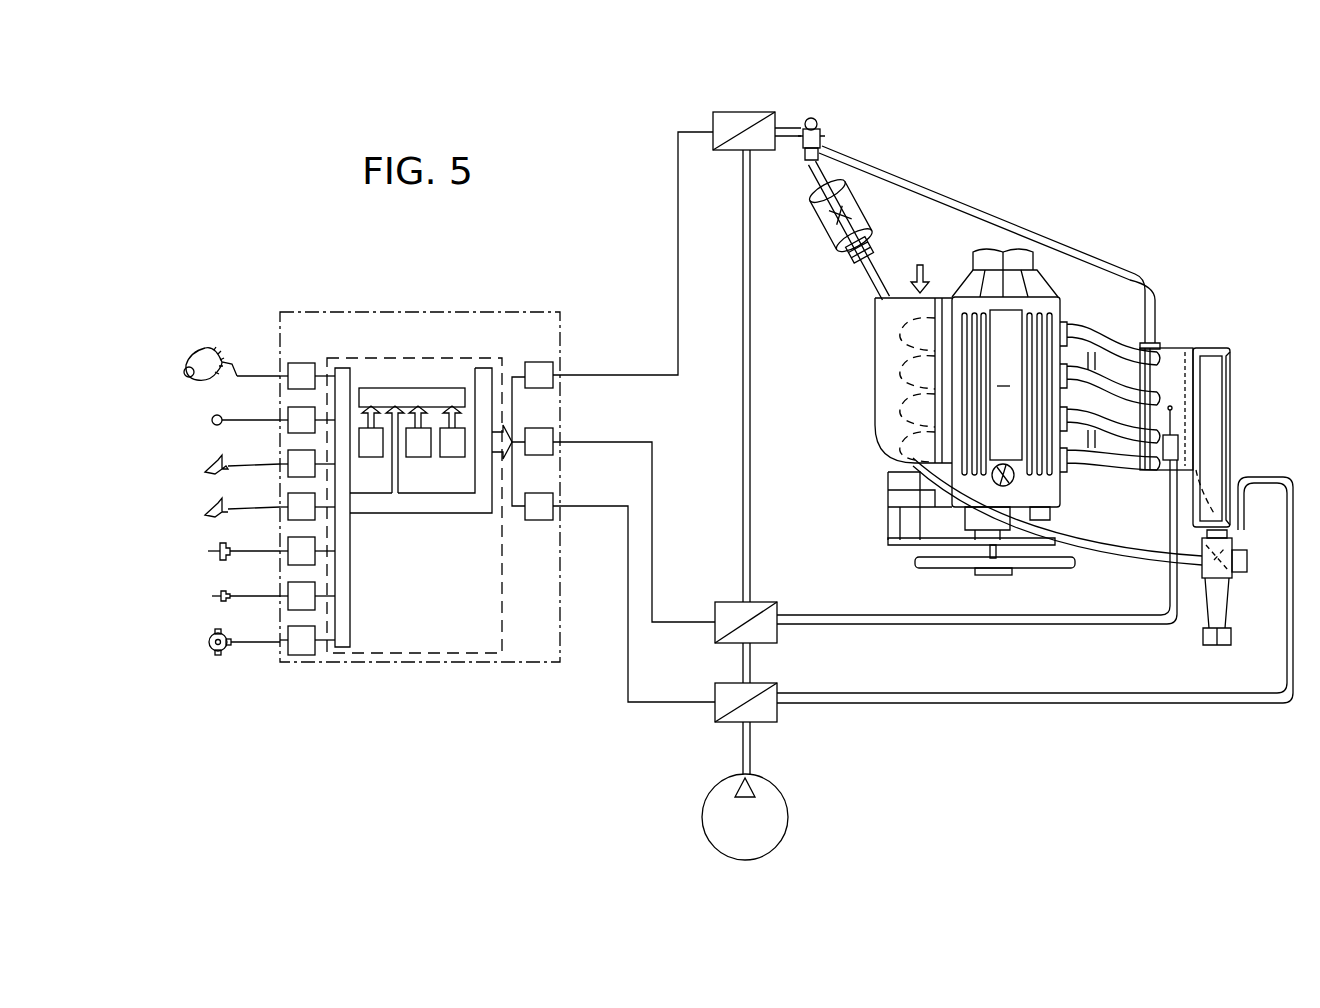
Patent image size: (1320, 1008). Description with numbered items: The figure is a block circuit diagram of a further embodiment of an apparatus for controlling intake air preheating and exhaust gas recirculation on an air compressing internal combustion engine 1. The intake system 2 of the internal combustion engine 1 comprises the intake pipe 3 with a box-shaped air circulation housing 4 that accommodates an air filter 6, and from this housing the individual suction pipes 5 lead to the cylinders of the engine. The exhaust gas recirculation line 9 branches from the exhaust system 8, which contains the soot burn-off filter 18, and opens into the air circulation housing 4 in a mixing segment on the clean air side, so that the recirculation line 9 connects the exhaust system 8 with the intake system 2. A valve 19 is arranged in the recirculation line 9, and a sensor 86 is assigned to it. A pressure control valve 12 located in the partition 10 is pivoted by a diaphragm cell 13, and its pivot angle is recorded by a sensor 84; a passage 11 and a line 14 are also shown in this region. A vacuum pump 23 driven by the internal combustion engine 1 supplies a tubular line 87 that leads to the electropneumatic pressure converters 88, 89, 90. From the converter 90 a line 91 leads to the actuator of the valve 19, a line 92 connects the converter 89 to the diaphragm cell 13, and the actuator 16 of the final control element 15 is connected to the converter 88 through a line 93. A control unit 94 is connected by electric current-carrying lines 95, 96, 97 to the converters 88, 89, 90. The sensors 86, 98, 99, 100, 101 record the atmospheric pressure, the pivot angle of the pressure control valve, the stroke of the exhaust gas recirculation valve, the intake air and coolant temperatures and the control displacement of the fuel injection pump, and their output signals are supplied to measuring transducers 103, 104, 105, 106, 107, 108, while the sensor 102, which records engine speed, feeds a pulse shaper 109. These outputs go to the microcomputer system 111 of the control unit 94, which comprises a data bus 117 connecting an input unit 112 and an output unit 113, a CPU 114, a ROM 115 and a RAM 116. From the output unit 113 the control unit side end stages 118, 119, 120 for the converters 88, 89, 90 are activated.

The internal combustion engine 1 is at (981, 412).
The intake system 2 is at (1200, 330).
The intake pipe 3 is at (1215, 412).
The air circulation housing 4 is at (1200, 348).
The suction pipes 5 is at (1105, 380).
The air filter 6 is at (1183, 362).
The exhaust system 8 is at (940, 238).
The exhaust gas recirculation line 9 is at (1108, 264).
The partition 10 is at (989, 542).
The exhaust passage 11 is at (1183, 420).
The pressure control valve 12 is at (1212, 492).
The diaphragm cell 13 is at (1165, 455).
The crankcase line 14 is at (1105, 550).
The final control element 15 is at (1236, 544).
The actuator 16 is at (1243, 573).
The soot burn-off filter 18 is at (835, 220).
The valve 19 is at (823, 142).
The vacuum pump 23 is at (702, 815).
The sensor 84 is at (208, 470).
The sensor 86 is at (210, 512).
The tubular line 87 is at (755, 748).
The electropneumatic pressure converter 88 is at (778, 688).
The electropneumatic pressure converter 89 is at (760, 602).
The electropneumatic pressure converter 90 is at (726, 152).
The line 91 is at (780, 150).
The line 92 is at (960, 626).
The line 93 is at (1090, 704).
The control unit 94 is at (385, 716).
The electric current-carrying line 95 is at (678, 132).
The electric current-carrying line 96 is at (660, 610).
The electric current-carrying line 97 is at (655, 704).
The sensor 98 is at (212, 420).
The sensor 99 is at (210, 553).
The sensor 100 is at (218, 598).
The sensor 101 is at (214, 652).
The sensor 102 is at (207, 362).
The measuring transducer 103 is at (302, 647).
The measuring transducer 104 is at (300, 604).
The measuring transducer 105 is at (300, 559).
The measuring transducer 106 is at (300, 514).
The measuring transducer 107 is at (300, 471).
The measuring transducer 108 is at (300, 428).
The pulse shaper 109 is at (300, 383).
The microcomputer system 111 is at (470, 630).
The input unit 112 is at (343, 372).
The output unit 113 is at (484, 372).
The CPU 114 is at (372, 445).
The ROM 115 is at (418, 445).
The RAM 116 is at (452, 445).
The data bus 117 is at (415, 398).
The end stage 118 is at (542, 510).
The end stage 119 is at (542, 446).
The end stage 120 is at (542, 380).